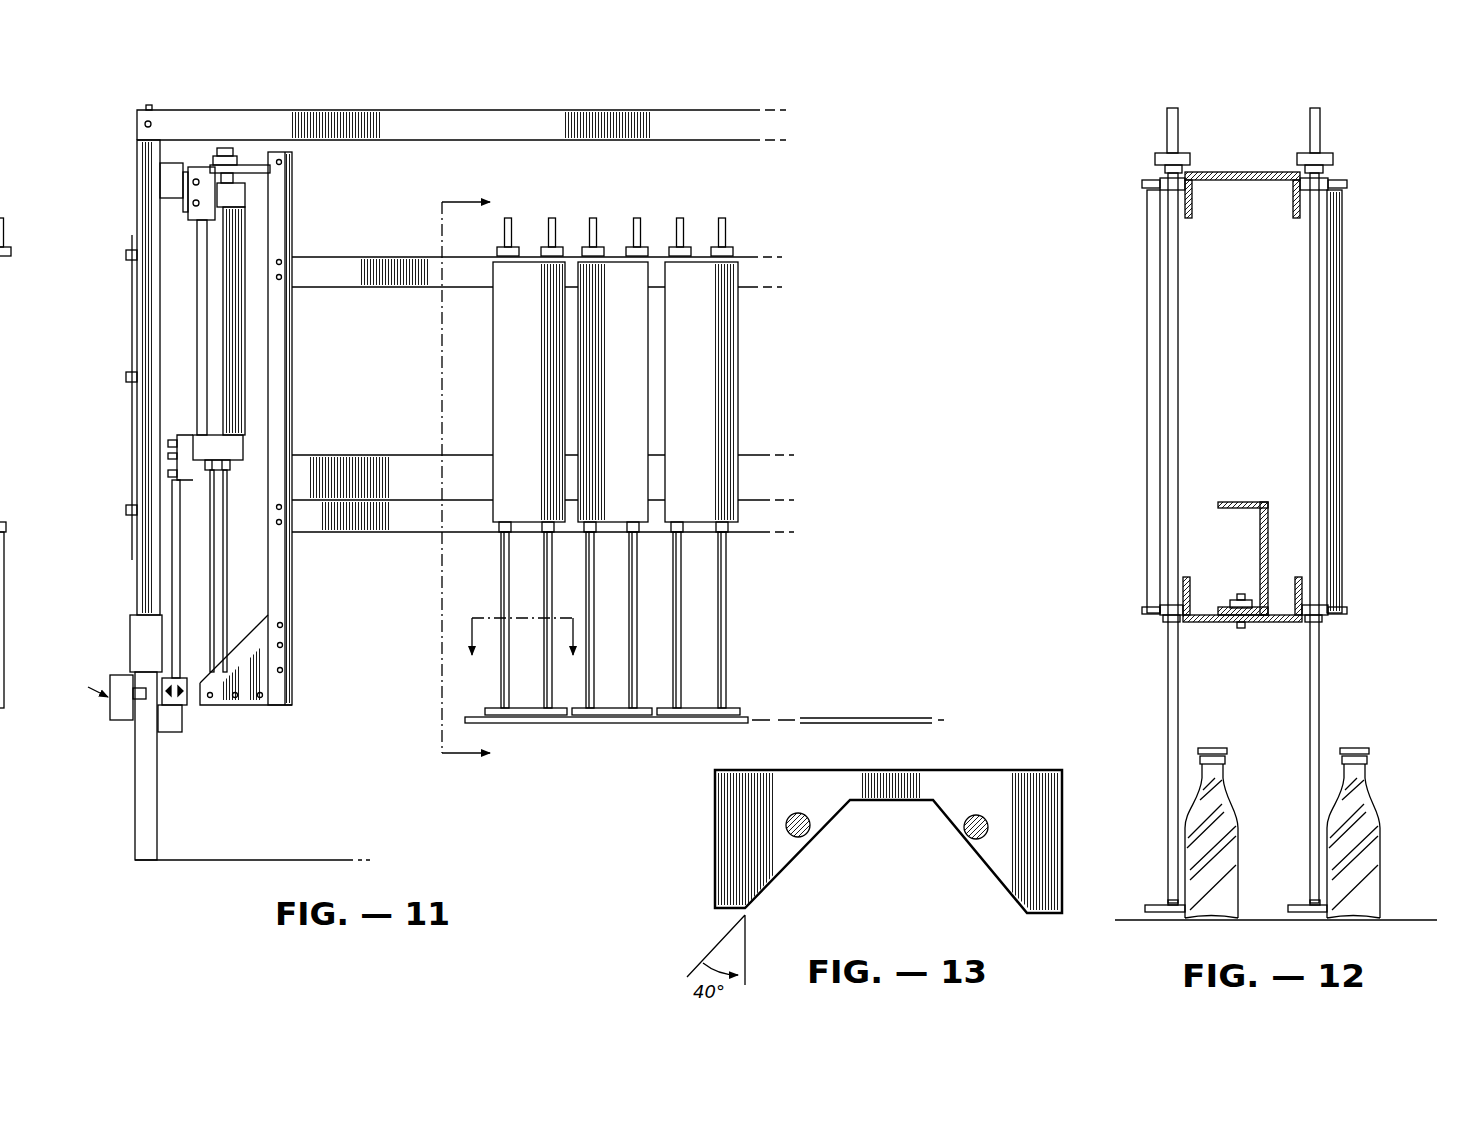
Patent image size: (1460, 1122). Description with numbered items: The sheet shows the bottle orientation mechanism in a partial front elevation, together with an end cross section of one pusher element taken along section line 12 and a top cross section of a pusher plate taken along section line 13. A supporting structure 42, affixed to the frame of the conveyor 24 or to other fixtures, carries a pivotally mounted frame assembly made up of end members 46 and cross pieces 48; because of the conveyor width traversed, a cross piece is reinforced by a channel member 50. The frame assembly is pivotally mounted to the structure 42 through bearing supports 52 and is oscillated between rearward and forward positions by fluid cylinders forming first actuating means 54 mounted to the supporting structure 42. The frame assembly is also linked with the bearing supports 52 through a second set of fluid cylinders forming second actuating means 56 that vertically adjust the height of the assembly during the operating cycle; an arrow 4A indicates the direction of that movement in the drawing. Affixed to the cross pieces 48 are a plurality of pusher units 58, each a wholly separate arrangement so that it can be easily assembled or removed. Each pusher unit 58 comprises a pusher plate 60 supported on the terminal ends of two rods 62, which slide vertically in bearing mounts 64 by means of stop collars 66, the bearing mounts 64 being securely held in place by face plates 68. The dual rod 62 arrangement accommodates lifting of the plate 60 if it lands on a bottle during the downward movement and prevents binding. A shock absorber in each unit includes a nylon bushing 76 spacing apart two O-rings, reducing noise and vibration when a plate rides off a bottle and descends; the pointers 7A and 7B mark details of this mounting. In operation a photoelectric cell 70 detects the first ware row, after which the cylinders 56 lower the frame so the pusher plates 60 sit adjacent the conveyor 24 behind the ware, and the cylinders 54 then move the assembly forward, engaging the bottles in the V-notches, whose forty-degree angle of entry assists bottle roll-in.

In FIG. 11, the supporting structure 42 is at (162, 150).
In FIG. 11, the bearing supports 52 is at (172, 177).
In FIG. 11, the photoelectric cell 70 is at (123, 702).
In FIG. 11, the fluid cylinders or second actuating means 56 is at (218, 378).
In FIG. 11, the fluid cylinders or first actuating means 54 is at (190, 707).
In FIG. 11, the end members 46 is at (283, 572).
In FIG. 11, the cross pieces 48 is at (340, 268).
In FIG. 12, the cross pieces 48 is at (1247, 172).
In FIG. 11, the channel member 50 is at (380, 467).
In FIG. 12, the channel member 50 is at (1242, 502).
In FIG. 11, the direction arrow 4A is at (352, 635).
In FIG. 11, the section line 12— 12 is at (467, 481).
In FIG. 11, the section line 13— 13 is at (519, 654).
In FIG. 11, the face plates 68 is at (538, 388).
In FIG. 12, the face plates 68 is at (1335, 332).
In FIG. 11, the stop collars 66 is at (643, 250).
In FIG. 12, the stop collars 66 is at (1160, 152).
In FIG. 11, the pusher units 58 is at (527, 226).
In FIG. 12, the pusher units 58 is at (1160, 630).
In FIG. 11, the rods 62 is at (637, 563).
In FIG. 13, the rods 62 is at (958, 820).
In FIG. 12, the rods 62 is at (1150, 330).
In FIG. 11, the pusher plate 60 is at (717, 722).
In FIG. 13, the pusher plate 60 is at (1032, 848).
In FIG. 12, the pusher plate 60 is at (1153, 905).
In FIG. 11, the conveyor 24 is at (797, 720).
In FIG. 12, the conveyor 24 is at (1403, 918).
In FIG. 12, the nylon bushing 76 is at (1160, 168).
In FIG. 12, the pointer A 7A is at (1155, 173).
In FIG. 12, the pointer B 7B is at (1190, 185).
In FIG. 12, the bearing mounts 64 is at (1165, 187).